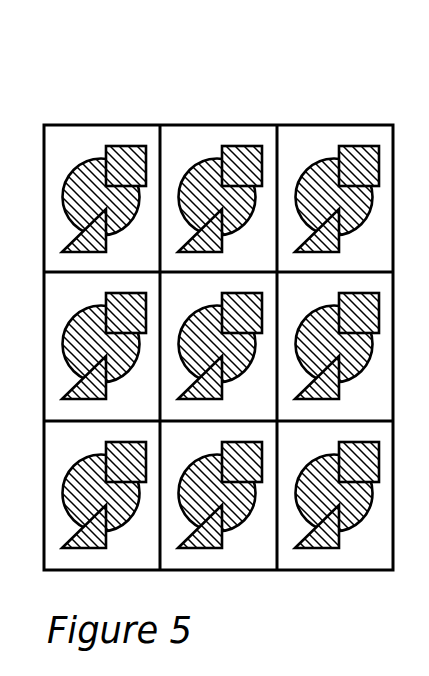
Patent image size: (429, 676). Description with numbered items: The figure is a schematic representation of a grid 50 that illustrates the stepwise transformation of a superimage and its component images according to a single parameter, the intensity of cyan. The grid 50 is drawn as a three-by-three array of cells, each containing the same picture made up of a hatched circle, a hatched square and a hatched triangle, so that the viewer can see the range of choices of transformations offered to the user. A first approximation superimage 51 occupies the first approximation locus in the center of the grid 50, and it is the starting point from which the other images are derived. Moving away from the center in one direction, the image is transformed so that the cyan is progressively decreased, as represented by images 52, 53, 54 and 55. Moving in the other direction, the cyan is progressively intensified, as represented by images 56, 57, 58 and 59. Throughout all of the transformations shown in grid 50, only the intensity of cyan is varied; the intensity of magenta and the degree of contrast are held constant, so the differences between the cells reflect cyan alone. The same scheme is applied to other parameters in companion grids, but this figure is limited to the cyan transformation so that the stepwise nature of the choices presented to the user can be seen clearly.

The grid 50 is at (172, 104).
The first approximation superimage 51 is at (220, 350).
The image 52 is at (104, 350).
The image 53 is at (337, 203).
The image 54 is at (220, 203).
The image 55 is at (100, 134).
The image 56 is at (337, 350).
The image 57 is at (104, 499).
The image 58 is at (220, 499).
The image 59 is at (337, 499).